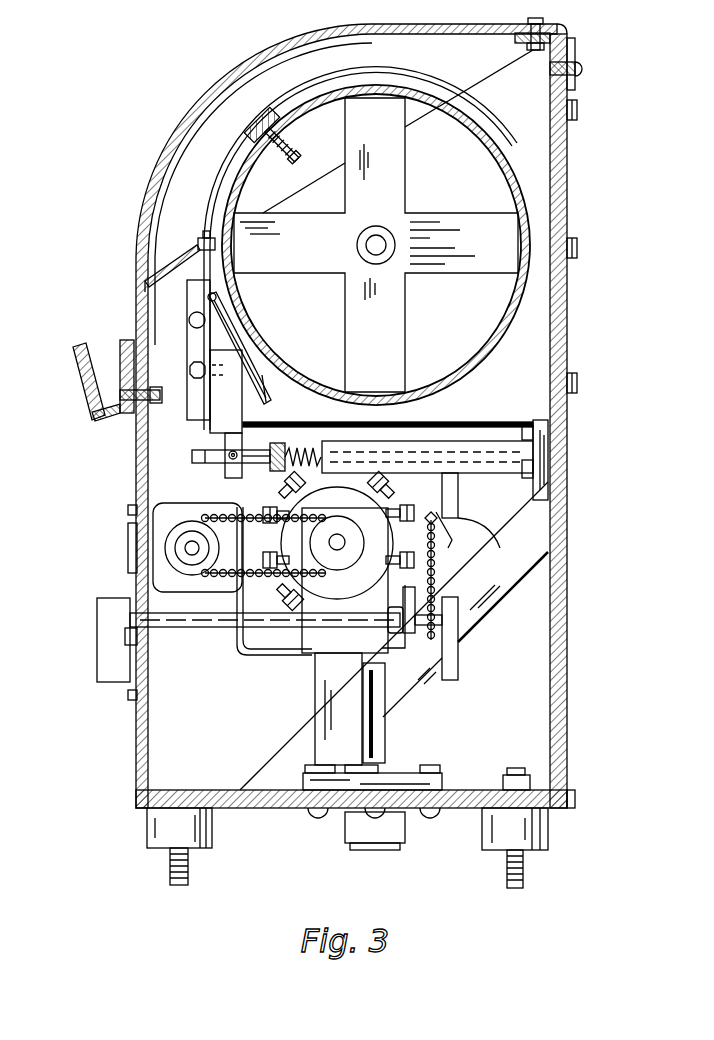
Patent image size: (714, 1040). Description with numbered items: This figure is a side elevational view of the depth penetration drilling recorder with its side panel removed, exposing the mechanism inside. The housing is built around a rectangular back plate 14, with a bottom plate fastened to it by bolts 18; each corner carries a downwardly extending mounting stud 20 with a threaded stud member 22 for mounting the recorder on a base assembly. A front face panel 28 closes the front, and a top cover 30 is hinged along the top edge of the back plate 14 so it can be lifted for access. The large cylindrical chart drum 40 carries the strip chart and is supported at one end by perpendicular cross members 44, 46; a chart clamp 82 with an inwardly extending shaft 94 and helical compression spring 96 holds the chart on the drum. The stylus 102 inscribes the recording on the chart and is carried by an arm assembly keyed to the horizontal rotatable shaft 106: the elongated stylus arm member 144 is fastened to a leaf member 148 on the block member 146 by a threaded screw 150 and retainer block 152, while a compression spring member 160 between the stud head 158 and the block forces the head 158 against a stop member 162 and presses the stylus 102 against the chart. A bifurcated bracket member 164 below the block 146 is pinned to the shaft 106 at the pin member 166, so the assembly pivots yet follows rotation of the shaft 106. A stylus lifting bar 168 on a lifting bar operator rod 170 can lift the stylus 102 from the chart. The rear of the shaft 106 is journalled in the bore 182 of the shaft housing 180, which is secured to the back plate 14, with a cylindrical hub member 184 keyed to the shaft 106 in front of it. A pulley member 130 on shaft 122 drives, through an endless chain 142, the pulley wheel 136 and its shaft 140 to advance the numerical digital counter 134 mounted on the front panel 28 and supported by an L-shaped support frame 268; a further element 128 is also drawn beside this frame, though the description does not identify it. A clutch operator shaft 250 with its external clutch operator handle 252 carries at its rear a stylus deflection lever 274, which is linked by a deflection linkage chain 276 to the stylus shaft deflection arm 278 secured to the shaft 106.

The back plate 14 is at (567, 613).
The bolts 18 is at (576, 802).
The mounting studs 20 is at (205, 827).
The threaded stud member 22 is at (190, 870).
The front face panel 28 is at (137, 492).
The top cover 30 is at (174, 95).
The chart drum 40 is at (509, 326).
The cross member 44 is at (360, 340).
The cross member 46 is at (315, 257).
The chart clamp 82 is at (266, 116).
The shaft 94 is at (292, 154).
The helical compression spring 96 is at (297, 163).
The stylus 102 is at (213, 228).
The rotatable shaft 106 is at (193, 454).
The shaft 122 is at (335, 556).
The rod 128 is at (380, 662).
The pulley member 130 is at (345, 562).
The numerical digital counter 134 is at (158, 514).
The pulley wheel 136 is at (177, 532).
The shaft 140 is at (193, 553).
The endless belt or chain 142 is at (262, 582).
The stylus arm member 144 is at (196, 246).
The block member 146 is at (243, 408).
The leaf member 148 is at (191, 370).
The threaded screw 150 is at (193, 317).
The retainer block 152 is at (190, 262).
The head 158 is at (194, 368).
The compression spring member 160 is at (205, 405).
The stop member 162 is at (188, 343).
The bifurcated bracket member 164 is at (236, 466).
The pin member 166 is at (230, 457).
The stylus lifting bar 168 is at (218, 297).
The lifting bar operator rod 170 is at (265, 372).
The shaft housing 180 is at (505, 477).
The bore 182 is at (510, 420).
The cylindrical hub member 184 is at (283, 448).
The clutch operator shaft 250 is at (193, 628).
The clutch operator handle 252 is at (97, 670).
The L-shaped support frame 268 is at (292, 655).
The stylus deflection lever 274 is at (458, 663).
The deflection linkage chain 276 is at (440, 562).
The stylus shaft deflection arm 278 is at (483, 543).